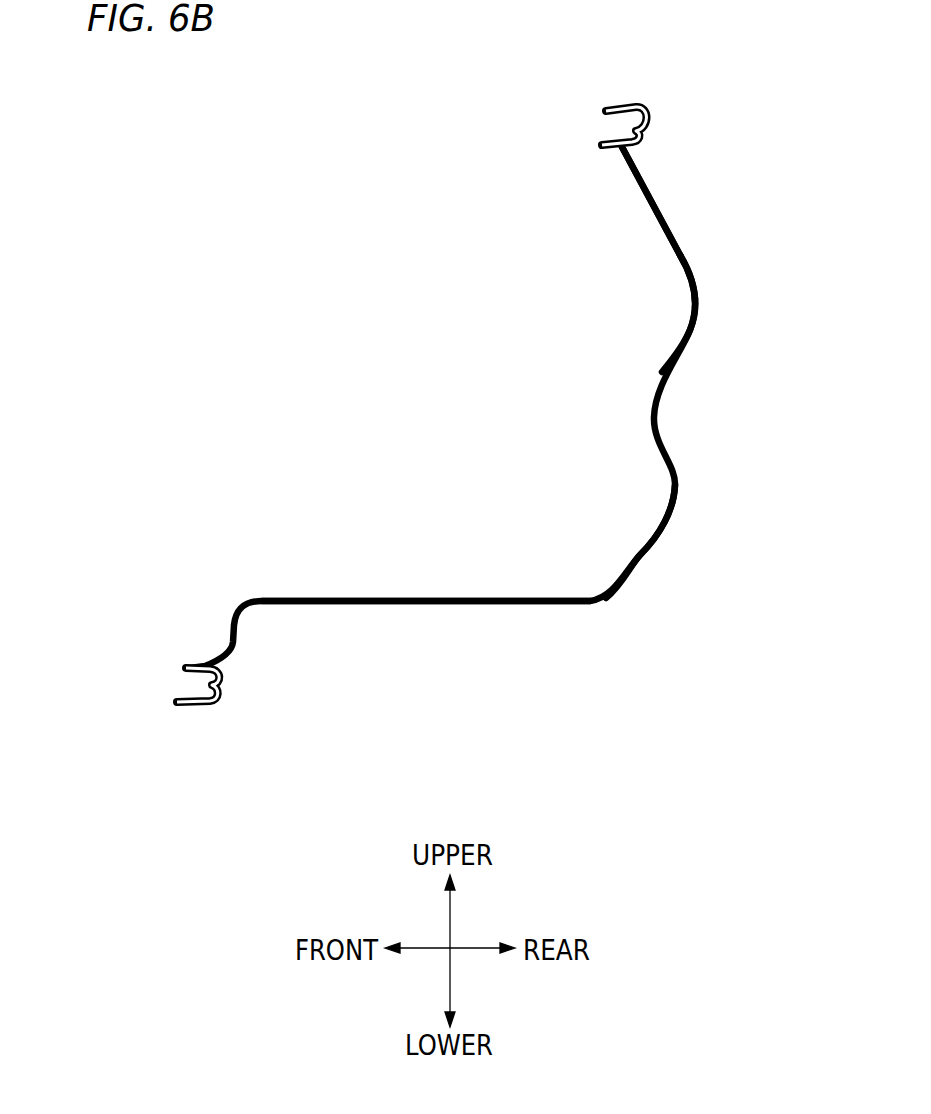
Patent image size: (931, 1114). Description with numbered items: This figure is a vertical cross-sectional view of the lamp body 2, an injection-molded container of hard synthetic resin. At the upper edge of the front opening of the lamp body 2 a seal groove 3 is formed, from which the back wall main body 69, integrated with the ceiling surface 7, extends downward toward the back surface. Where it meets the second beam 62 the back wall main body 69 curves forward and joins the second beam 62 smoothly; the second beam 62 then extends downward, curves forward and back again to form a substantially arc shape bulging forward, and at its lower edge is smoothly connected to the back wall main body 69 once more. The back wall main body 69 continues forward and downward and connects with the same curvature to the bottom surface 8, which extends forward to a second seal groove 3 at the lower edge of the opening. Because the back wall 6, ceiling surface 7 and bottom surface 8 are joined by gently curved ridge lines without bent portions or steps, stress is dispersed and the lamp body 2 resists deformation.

The lamp body 2 is at (298, 277).
The seal groove 3 is at (610, 120).
The back wall 6 is at (468, 384).
The ceiling surface 7 is at (636, 178).
The bottom surface 8 is at (350, 598).
The second beam 62 is at (652, 412).
The back wall main body 69 is at (672, 250).